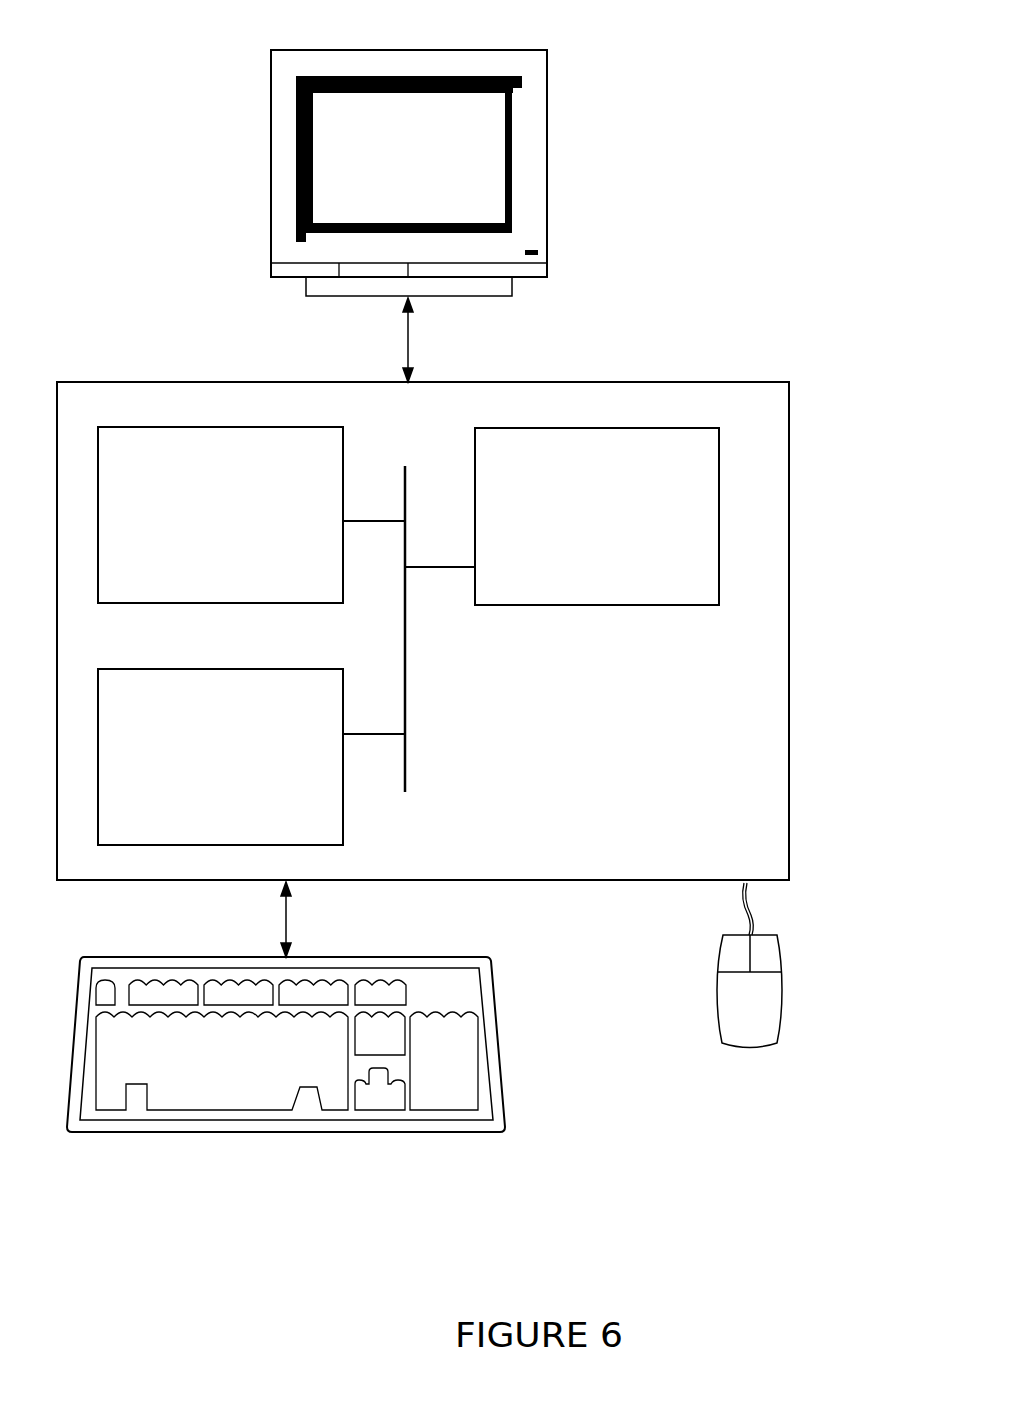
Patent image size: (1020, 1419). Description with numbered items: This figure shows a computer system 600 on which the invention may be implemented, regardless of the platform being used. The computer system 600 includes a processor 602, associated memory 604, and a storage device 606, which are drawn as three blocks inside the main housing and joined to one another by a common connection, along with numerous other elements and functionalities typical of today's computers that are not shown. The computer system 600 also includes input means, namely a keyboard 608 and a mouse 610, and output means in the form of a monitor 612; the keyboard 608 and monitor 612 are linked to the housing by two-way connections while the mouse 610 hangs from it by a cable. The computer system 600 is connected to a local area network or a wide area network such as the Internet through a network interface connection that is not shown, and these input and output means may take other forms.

The computer system 600 is at (812, 222).
The processor 602 is at (592, 529).
The memory 604 is at (199, 527).
The storage device 606 is at (195, 769).
The keyboard 608 is at (189, 1085).
The mouse 610 is at (795, 996).
The monitor 612 is at (385, 175).